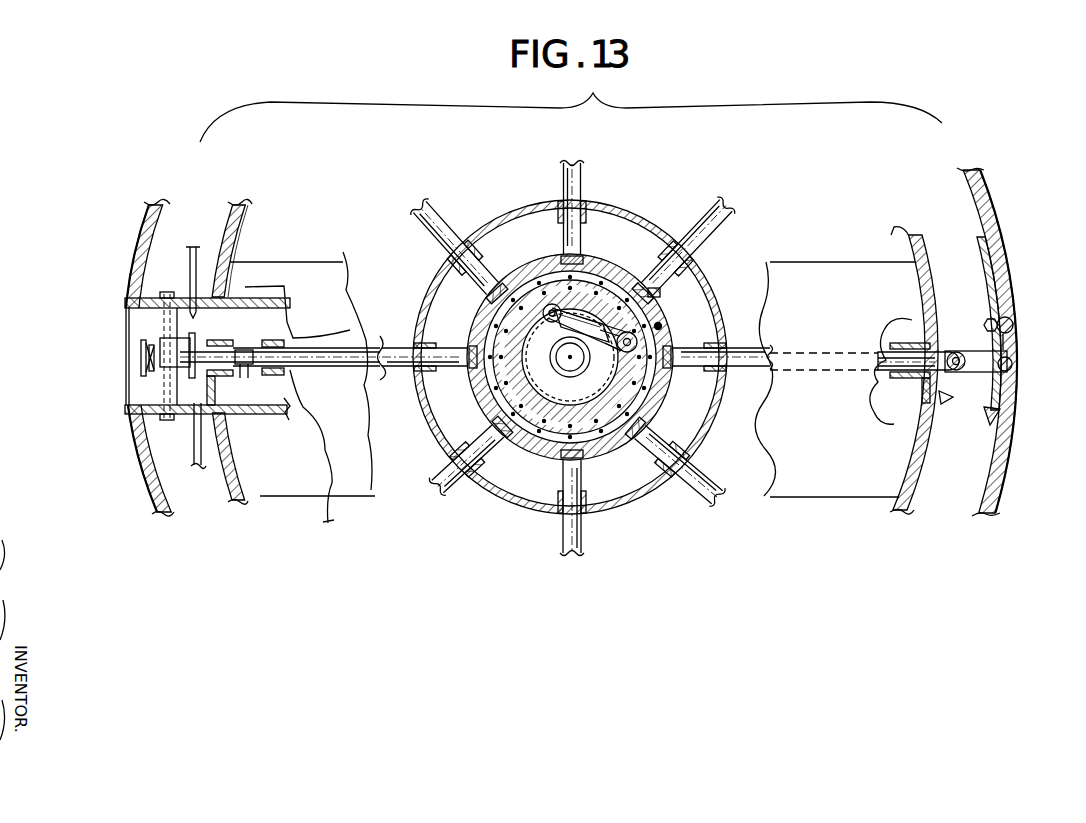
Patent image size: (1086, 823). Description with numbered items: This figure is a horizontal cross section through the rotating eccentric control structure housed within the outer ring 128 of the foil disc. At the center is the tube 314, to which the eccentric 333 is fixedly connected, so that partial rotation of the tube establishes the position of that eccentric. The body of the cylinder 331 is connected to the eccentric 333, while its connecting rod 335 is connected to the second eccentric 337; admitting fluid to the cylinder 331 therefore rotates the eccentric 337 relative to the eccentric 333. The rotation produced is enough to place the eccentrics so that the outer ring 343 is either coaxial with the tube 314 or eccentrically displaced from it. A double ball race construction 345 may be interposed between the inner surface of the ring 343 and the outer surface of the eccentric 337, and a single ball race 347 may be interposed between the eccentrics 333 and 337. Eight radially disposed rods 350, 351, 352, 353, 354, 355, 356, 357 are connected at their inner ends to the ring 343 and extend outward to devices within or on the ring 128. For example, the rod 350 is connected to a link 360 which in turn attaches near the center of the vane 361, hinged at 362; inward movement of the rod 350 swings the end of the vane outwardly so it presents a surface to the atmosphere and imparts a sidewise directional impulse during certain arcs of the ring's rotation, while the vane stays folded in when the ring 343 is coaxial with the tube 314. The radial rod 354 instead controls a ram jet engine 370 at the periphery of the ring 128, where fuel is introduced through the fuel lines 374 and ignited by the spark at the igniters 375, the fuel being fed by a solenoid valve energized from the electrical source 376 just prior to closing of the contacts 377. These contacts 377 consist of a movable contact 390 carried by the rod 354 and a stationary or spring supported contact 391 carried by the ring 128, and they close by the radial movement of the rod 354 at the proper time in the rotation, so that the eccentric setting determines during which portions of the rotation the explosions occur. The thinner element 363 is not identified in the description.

The outer ring 128 is at (152, 229).
The tube 314 is at (640, 376).
The cylinder 331 is at (600, 305).
The eccentric 333 is at (572, 390).
The connecting rod 335 is at (600, 318).
The eccentric 337 is at (608, 402).
The outer ring 343 is at (663, 326).
The double ball race construction 345 is at (660, 296).
The single ball race 347 is at (522, 440).
The radially disposed rod 350 is at (741, 347).
The radially disposed rod 351 is at (732, 224).
The radially disposed rod 352 is at (583, 178).
The radially disposed rod 353 is at (437, 210).
The radial rod 354 is at (393, 346).
The radially disposed rod 355 is at (453, 490).
The radially disposed rod 356 is at (587, 547).
The radially disposed rod 357 is at (705, 465).
The link 360 is at (975, 373).
The vane 361 is at (1017, 375).
The hinge 362 is at (1015, 324).
The liner 363 is at (1001, 243).
The ram jet engine 370 is at (196, 245).
The fuel line 374 is at (214, 245).
The igniter 375 is at (143, 340).
The electrical source 376 is at (330, 470).
The contacts 377 is at (260, 378).
The movable contact 390 is at (290, 380).
The stationary contact 391 is at (244, 380).